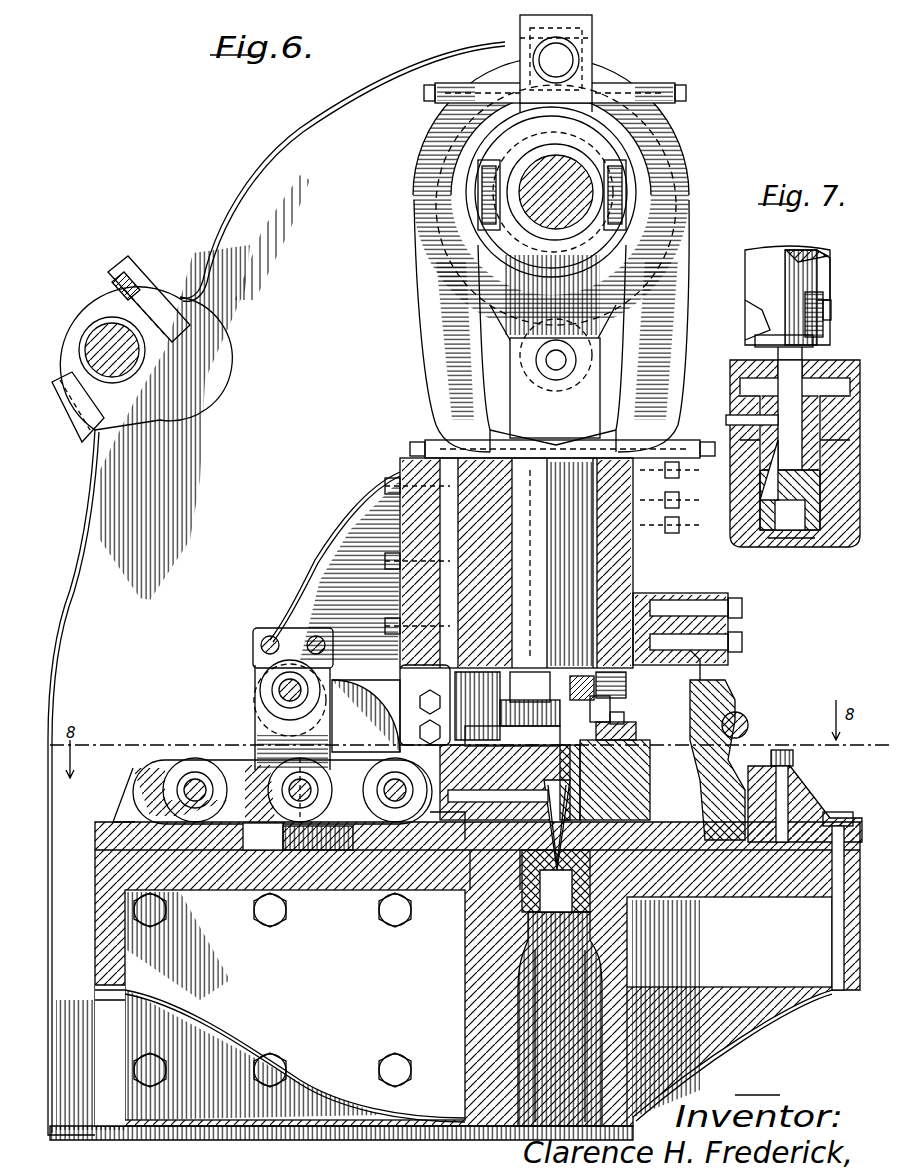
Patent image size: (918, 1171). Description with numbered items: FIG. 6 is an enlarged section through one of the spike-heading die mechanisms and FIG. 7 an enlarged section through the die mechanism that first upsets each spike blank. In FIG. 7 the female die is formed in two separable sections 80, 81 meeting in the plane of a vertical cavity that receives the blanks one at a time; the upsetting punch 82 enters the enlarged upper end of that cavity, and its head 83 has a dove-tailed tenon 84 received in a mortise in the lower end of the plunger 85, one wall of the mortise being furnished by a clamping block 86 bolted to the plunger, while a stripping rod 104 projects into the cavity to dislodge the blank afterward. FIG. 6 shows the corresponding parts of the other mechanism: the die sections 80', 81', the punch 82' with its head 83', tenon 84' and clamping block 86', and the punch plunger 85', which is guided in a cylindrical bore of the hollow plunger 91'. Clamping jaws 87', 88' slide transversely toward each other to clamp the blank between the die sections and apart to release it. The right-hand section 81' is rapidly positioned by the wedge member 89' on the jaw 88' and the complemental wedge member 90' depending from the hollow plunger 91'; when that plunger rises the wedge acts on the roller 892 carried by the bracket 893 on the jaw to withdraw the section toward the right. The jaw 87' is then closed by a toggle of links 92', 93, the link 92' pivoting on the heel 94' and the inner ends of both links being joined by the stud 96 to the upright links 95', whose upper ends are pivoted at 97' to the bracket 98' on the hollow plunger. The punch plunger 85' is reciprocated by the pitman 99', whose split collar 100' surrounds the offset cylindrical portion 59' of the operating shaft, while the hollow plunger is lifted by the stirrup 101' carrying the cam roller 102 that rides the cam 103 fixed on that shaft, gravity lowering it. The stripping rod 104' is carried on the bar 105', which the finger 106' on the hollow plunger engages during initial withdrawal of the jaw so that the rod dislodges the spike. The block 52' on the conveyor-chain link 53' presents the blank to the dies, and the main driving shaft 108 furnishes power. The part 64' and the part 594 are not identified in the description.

In FIG. 6, the cam roller 102 is at (595, 68).
In FIG. 6, the cam 103 is at (418, 145).
In FIG. 6, the split collar 100' is at (489, 192).
In FIG. 6, the offset cylindrical portion of the shaft 59' is at (583, 205).
In FIG. 6, the yoke interior 594 is at (470, 252).
In FIG. 6, the stirrup 101' is at (520, 326).
In FIG. 6, the pitman 99' is at (491, 355).
In FIG. 6, the main driving shaft 108 is at (105, 330).
In FIG. 6, the housing 64' is at (276, 588).
In FIG. 6, the bracket 98' is at (326, 566).
In FIG. 6, the hollow plunger 91' is at (563, 563).
In FIG. 6, the pivotal connection 97' is at (266, 674).
In FIG. 6, the upright links 95' is at (258, 717).
In FIG. 6, the finger 106' is at (366, 709).
In FIG. 6, the link 93 is at (272, 775).
In FIG. 6, the heel 94' is at (188, 773).
In FIG. 6, the link 92' is at (270, 773).
In FIG. 6, the stud 96 is at (305, 800).
In FIG. 6, the female die section 80' is at (505, 746).
In FIG. 6, the punch plunger 85' is at (487, 706).
In FIG. 6, the dove-tailed tenon 84' is at (608, 688).
In FIG. 6, the clamping block 86' is at (641, 685).
In FIG. 6, the punch head 83' is at (614, 707).
In FIG. 6, the upsetting punch 82' is at (596, 764).
In FIG. 6, the female die section 81' is at (617, 764).
In FIG. 6, the bracket 893 is at (712, 720).
In FIG. 6, the roller 892 is at (740, 712).
In FIG. 6, the wedge member 89' is at (735, 760).
In FIG. 6, the wedge member 90' is at (805, 862).
In FIG. 6, the clamping jaw 88' is at (631, 881).
In FIG. 6, the block 52' is at (625, 1015).
In FIG. 6, the conveyor chain link 53' is at (634, 1031).
In FIG. 6, the bar 105' is at (404, 888).
In FIG. 6, the clamping jaw 87' is at (486, 872).
In FIG. 6, the stripping rod 104' is at (485, 867).
In FIG. 7, the plunger 85 is at (769, 295).
In FIG. 7, the clamping block 86 is at (824, 297).
In FIG. 7, the punch head 83 is at (834, 314).
In FIG. 7, the dove-tailed tenon 84 is at (742, 314).
In FIG. 7, the upsetting punch 82 is at (763, 327).
In FIG. 7, the female die section 80 is at (757, 416).
In FIG. 7, the female die section 81 is at (797, 439).
In FIG. 7, the stripping rod 104 is at (735, 404).